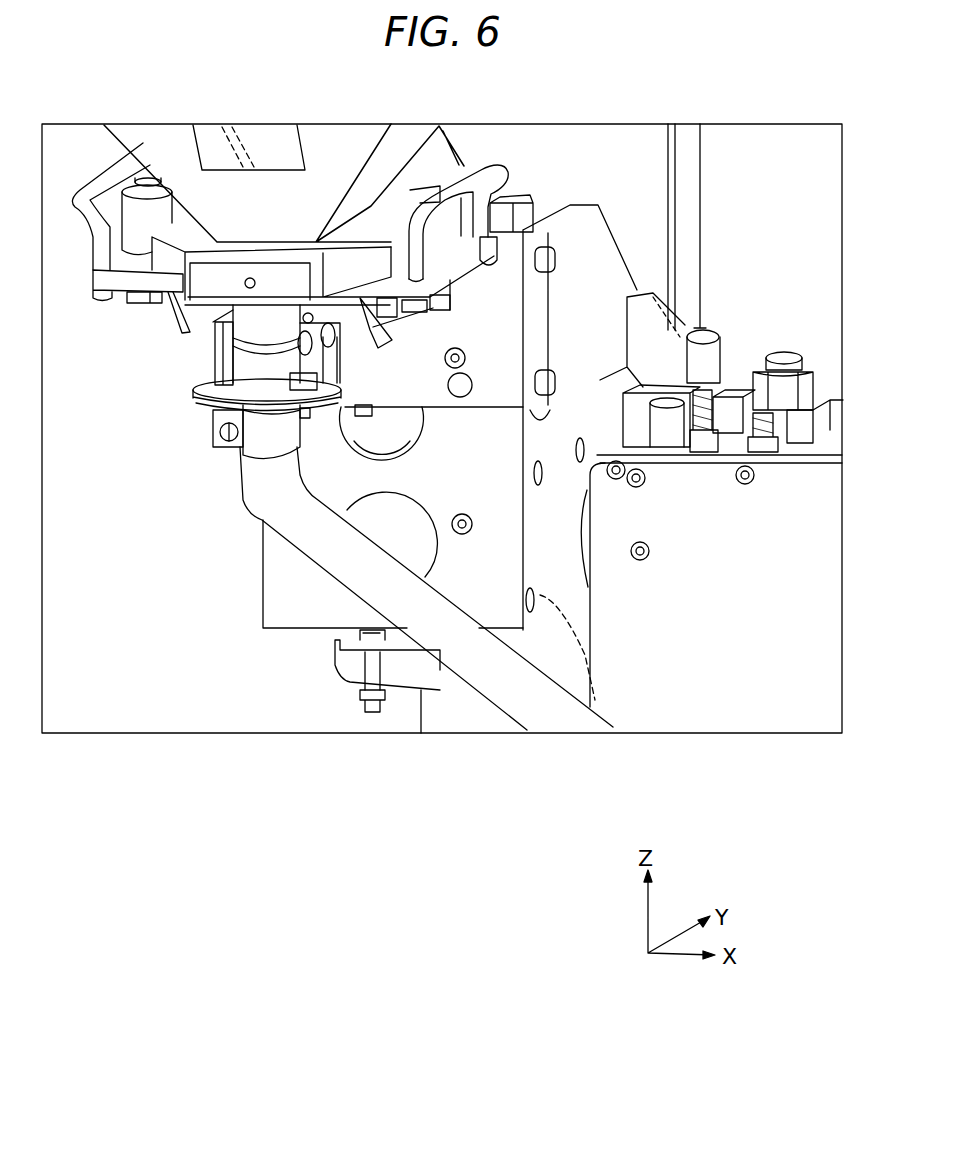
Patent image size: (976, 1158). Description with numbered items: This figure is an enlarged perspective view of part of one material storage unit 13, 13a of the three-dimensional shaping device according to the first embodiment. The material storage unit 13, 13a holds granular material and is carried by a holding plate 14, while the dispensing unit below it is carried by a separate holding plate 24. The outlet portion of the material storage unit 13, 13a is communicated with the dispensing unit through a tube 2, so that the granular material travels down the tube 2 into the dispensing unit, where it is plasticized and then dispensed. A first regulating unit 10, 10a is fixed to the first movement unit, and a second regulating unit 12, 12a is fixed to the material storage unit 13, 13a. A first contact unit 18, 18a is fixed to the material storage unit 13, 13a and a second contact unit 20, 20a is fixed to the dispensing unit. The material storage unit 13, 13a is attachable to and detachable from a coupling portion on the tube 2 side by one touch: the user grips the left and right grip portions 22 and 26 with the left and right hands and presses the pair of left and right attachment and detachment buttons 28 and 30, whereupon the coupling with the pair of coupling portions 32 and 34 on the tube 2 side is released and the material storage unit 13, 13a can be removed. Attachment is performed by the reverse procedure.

The tube 2 is at (487, 685).
The first regulating unit 10 is at (335, 626).
The first regulating unit 10a is at (338, 640).
The second regulating unit 12 is at (285, 445).
The second regulating unit 12a is at (423, 430).
The material storage unit 13 is at (284, 156).
The material storage unit 13a is at (172, 148).
The holding plate 14 is at (500, 327).
The first contact unit 18 is at (787, 438).
The first contact unit 18a is at (732, 430).
The second contact unit 20 is at (709, 473).
The second contact unit 20a is at (687, 447).
The grip portion 22 is at (102, 178).
The holding plate 24 is at (688, 703).
The grip portion 26 is at (487, 162).
The attachment and detachment button 28 is at (148, 180).
The attachment and detachment button 30 is at (431, 184).
The coupling portion 32 is at (137, 305).
The coupling portion 34 is at (540, 246).